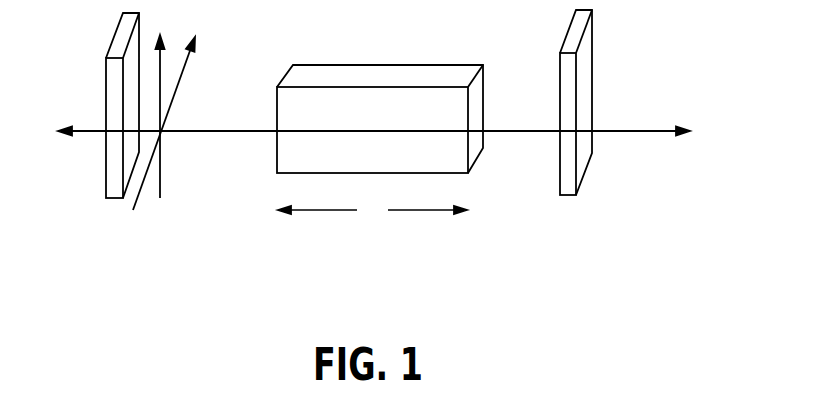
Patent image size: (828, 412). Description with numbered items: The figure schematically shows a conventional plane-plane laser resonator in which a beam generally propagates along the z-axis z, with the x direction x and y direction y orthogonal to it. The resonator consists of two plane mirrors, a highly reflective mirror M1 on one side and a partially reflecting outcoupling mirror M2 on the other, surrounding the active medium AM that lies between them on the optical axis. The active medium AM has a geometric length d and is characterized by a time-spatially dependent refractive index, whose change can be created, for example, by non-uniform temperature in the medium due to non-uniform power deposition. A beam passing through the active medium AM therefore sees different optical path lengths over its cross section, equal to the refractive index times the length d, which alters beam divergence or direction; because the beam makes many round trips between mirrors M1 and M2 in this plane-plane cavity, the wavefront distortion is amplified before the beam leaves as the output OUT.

The resonator mirror M1 is at (127, 130).
The outcoupling mirror M2 is at (575, 128).
The active medium AM is at (435, 77).
The length of active medium d is at (372, 211).
The x direction x is at (157, 100).
The y direction y is at (174, 120).
The z-axis z is at (363, 117).
The output beam OUT is at (715, 130).